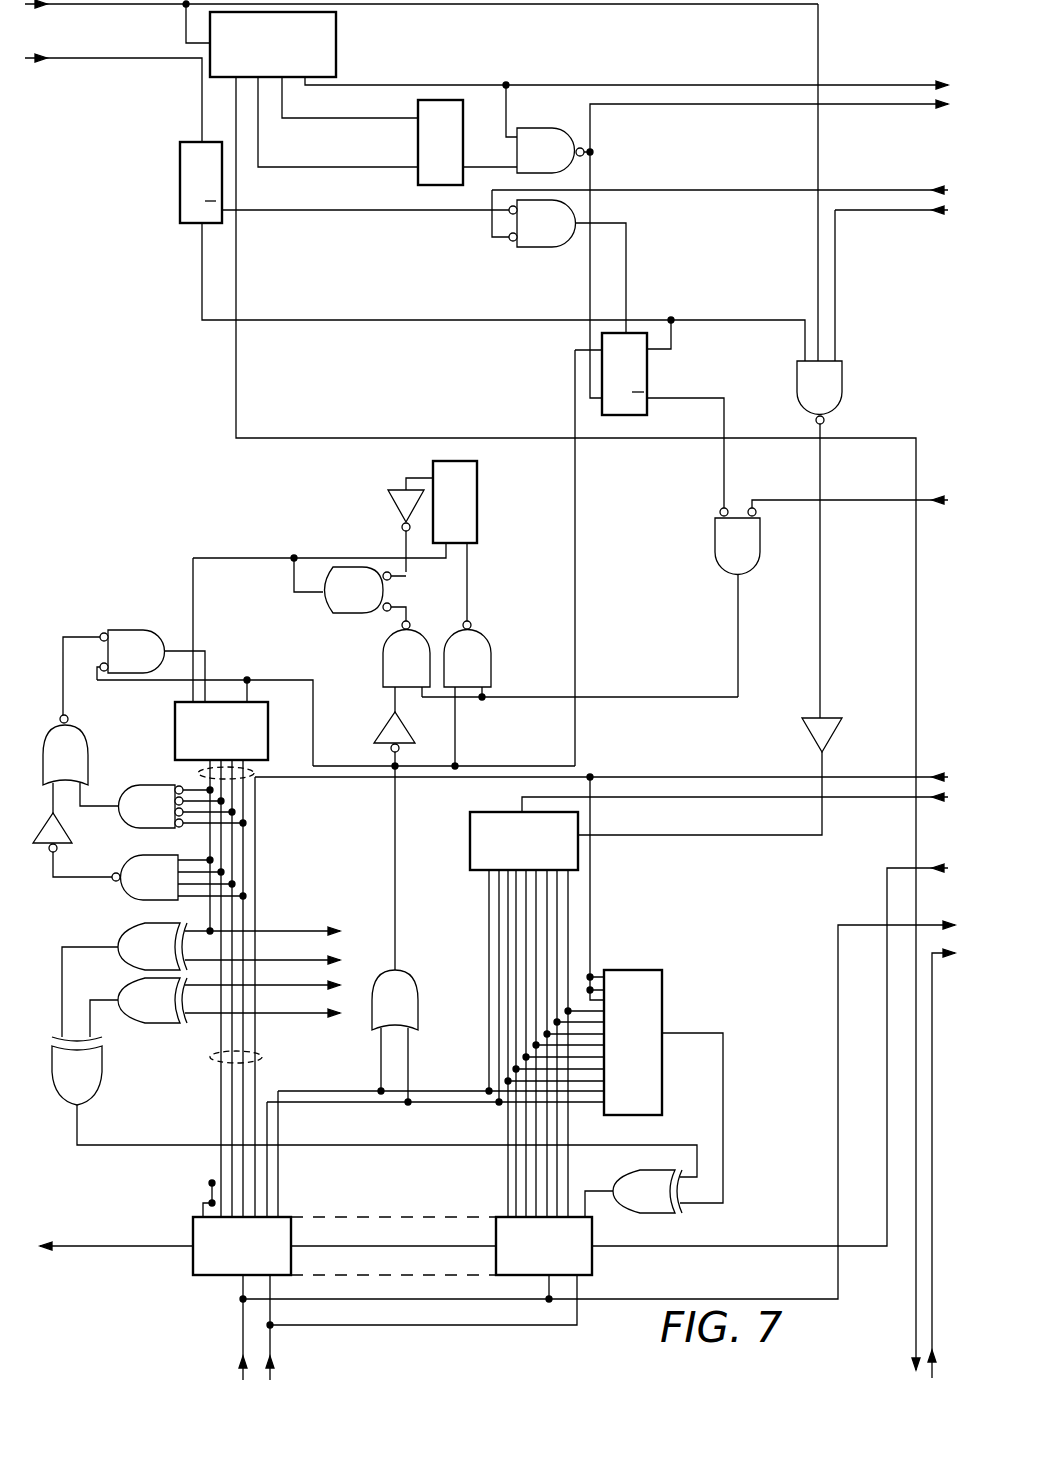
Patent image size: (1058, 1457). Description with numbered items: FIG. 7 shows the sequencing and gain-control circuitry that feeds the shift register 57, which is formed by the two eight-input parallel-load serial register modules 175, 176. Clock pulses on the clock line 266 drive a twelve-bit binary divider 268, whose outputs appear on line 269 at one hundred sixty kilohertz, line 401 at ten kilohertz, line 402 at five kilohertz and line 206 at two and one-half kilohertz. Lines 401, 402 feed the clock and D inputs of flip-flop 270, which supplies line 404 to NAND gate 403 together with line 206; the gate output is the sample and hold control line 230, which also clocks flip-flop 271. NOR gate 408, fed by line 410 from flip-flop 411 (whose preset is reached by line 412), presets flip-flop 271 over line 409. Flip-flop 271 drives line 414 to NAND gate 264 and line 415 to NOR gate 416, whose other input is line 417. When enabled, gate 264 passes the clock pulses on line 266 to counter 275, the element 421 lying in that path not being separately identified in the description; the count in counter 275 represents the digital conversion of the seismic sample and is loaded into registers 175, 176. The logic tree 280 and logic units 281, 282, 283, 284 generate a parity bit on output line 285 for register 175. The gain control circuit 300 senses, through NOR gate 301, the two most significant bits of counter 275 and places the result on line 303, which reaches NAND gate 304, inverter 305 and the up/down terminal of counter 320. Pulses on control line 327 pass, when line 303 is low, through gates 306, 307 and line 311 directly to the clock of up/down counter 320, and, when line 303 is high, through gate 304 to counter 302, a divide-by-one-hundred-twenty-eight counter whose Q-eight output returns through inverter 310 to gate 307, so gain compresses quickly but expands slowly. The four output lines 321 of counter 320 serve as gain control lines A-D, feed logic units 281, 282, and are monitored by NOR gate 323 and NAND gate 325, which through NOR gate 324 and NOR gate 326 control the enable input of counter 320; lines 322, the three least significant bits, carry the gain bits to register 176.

The clock line 266 is at (136, 9).
The line 412 is at (130, 61).
The divider 268 is at (336, 22).
The line 206 is at (374, 86).
The line 402 is at (338, 116).
The line 401 is at (262, 172).
The flip-flop 411 is at (180, 190).
The line 410 is at (280, 214).
The flip-flop 270 is at (470, 128).
The NAND gate 403 is at (516, 136).
The sample and hold control line 230 is at (590, 150).
The line 404 is at (476, 170).
The NOR gate 408 is at (568, 244).
The line 409 is at (636, 236).
The line 269 is at (236, 347).
The line 414 is at (671, 345).
The flip-flop 271 is at (640, 414).
The NAND gate 264 is at (838, 408).
The line 415 is at (724, 475).
The line 417 is at (834, 508).
The NOR gate 416 is at (715, 558).
The inverter 421 is at (820, 716).
The gain control circuit 300 is at (332, 546).
The counter 302 is at (477, 475).
The inverter 310 is at (390, 505).
The line 311 is at (222, 560).
The NAND gate 307 is at (385, 595).
The NAND gate 306 is at (422, 646).
The NAND gate 304 is at (488, 646).
The inverter 305 is at (397, 716).
The control line 327 is at (662, 704).
The NOR gate 326 is at (108, 632).
The up/down counter 320 is at (175, 736).
The output lines 321 is at (200, 773).
The NOR gate 324 is at (88, 762).
The NOR gate 323 is at (120, 824).
The NAND gate 325 is at (122, 862).
The line 303 is at (395, 814).
The counter 275 is at (470, 816).
The NOR gate 301 is at (430, 1018).
The logic tree 280 is at (662, 984).
The logic unit 281 is at (122, 938).
The logic unit 282 is at (126, 1022).
The logic unit 283 is at (98, 1082).
The lines 322 is at (212, 1060).
The logic unit 284 is at (630, 1180).
The output line 285 is at (598, 1190).
The shift register 57 is at (360, 1216).
The register module 176 is at (193, 1267).
The register module 175 is at (592, 1276).